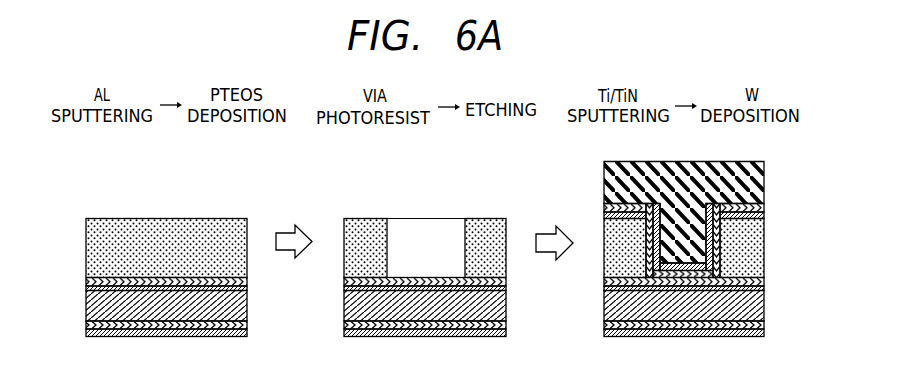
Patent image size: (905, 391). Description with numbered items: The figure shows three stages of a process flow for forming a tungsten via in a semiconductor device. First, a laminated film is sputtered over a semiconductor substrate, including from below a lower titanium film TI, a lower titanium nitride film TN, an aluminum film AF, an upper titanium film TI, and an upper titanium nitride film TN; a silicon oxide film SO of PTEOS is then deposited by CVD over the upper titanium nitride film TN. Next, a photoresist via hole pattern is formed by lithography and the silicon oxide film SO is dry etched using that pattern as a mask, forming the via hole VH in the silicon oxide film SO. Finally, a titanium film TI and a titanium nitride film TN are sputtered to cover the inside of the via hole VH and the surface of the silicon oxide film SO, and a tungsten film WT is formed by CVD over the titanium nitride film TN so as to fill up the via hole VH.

The silicon oxide film SO is at (90, 240).
The titanium nitride film TN is at (87, 277).
The titanium film TI is at (87, 287).
The aluminum film AF is at (87, 298).
The via hole VH is at (422, 230).
The tungsten film WT is at (757, 182).